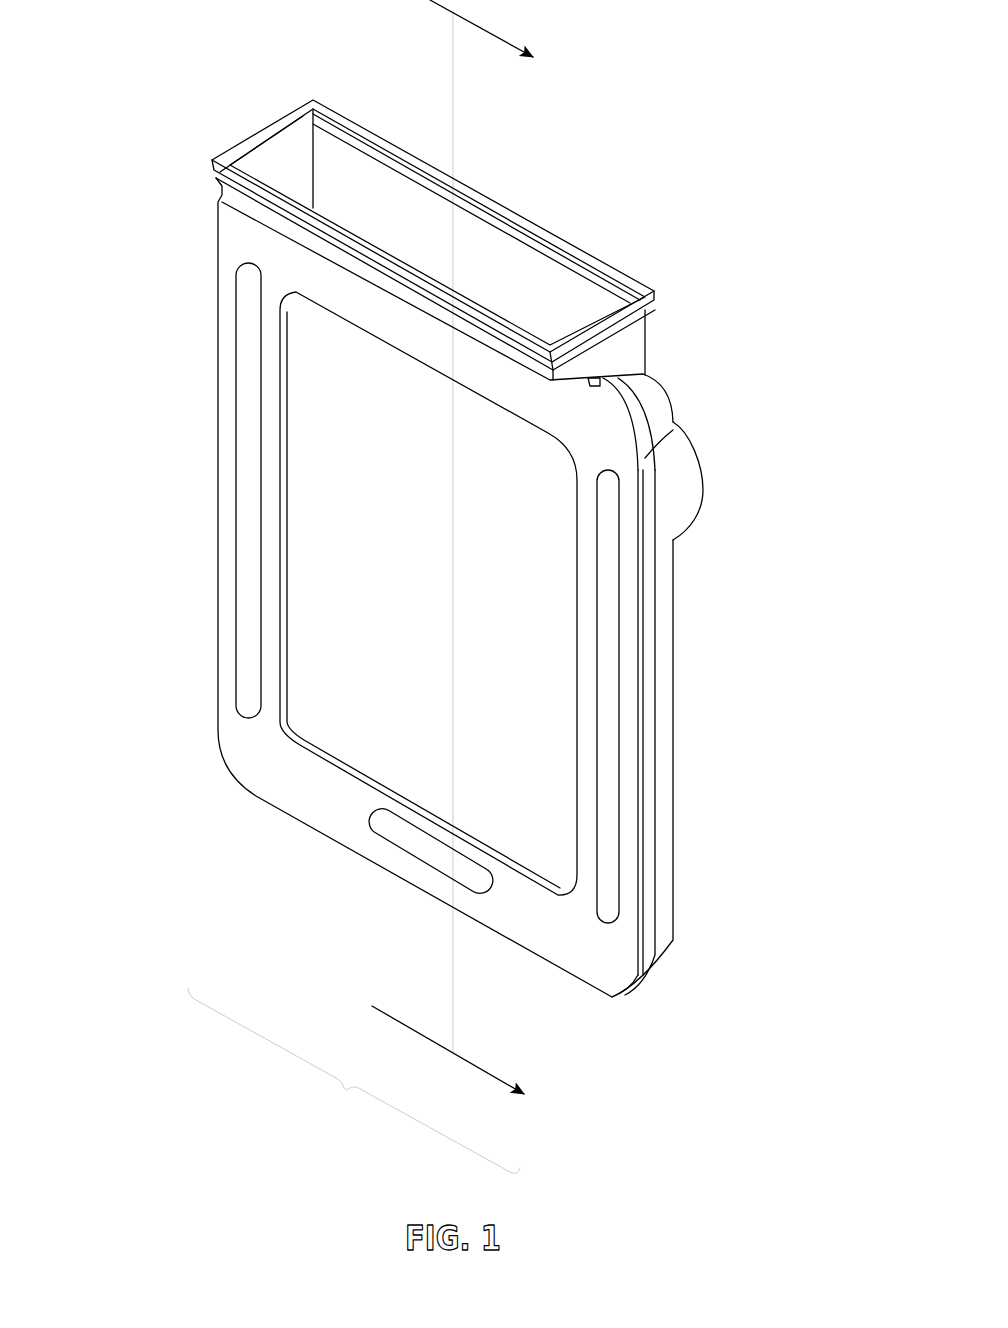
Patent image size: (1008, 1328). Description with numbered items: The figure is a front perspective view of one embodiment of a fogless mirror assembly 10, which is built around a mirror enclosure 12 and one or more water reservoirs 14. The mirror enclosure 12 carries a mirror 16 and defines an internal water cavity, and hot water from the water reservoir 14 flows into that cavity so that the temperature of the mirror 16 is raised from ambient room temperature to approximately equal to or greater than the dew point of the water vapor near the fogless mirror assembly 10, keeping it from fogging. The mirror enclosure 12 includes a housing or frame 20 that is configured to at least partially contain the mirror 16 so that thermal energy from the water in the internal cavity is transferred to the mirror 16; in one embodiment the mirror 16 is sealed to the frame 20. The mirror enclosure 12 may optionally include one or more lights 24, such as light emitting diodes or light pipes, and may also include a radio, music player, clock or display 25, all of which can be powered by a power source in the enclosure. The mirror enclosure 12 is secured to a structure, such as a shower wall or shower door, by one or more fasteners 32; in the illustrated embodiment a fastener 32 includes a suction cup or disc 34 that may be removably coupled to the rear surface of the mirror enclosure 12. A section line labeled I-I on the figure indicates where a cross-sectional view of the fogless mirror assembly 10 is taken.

The fogless mirror assembly 10 is at (460, 586).
The mirror enclosure 12 is at (460, 587).
The water reservoir 14 is at (233, 97).
The mirror 16 is at (540, 635).
The frame 20 is at (668, 864).
The lights 24 is at (248, 594).
The display 25 is at (402, 852).
The fastener 32 is at (690, 440).
The suction cup 34 is at (693, 488).